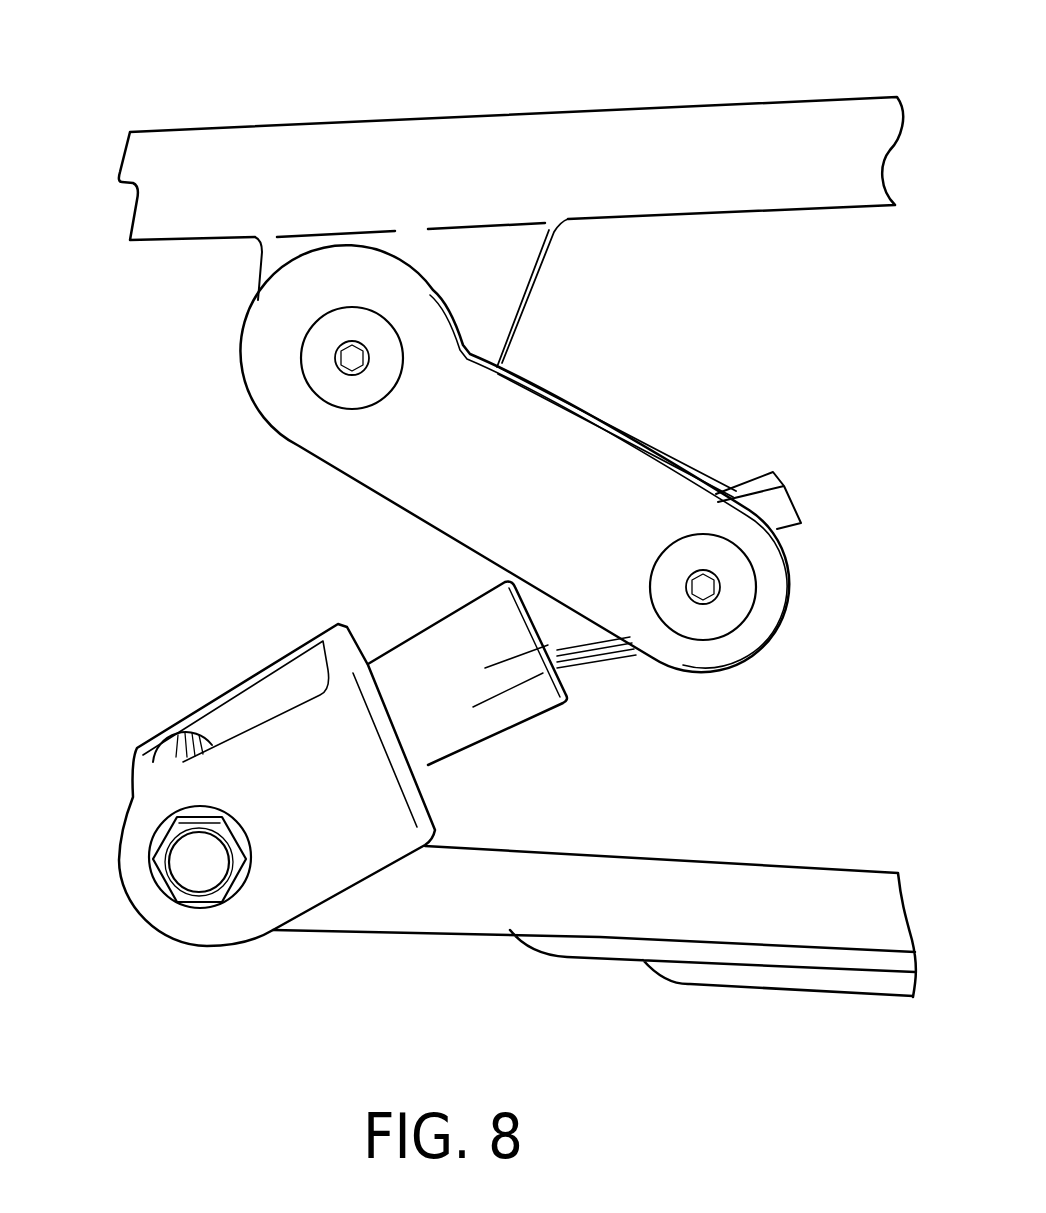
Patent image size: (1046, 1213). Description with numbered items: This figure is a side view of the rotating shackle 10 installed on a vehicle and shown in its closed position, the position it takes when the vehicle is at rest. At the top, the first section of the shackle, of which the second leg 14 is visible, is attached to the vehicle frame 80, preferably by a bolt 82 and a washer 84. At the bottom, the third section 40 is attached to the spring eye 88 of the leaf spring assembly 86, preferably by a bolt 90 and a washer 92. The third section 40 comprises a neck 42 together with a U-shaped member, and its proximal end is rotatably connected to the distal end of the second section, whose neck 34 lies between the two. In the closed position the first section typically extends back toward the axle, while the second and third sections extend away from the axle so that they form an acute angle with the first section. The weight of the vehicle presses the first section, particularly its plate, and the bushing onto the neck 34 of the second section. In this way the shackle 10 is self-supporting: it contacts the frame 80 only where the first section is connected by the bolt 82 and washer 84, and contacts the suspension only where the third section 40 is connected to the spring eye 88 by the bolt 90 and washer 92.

The rotating shackle 10 is at (432, 613).
The second leg 14 is at (487, 458).
The neck 34 is at (607, 655).
The third section 40 is at (285, 815).
The neck 42 is at (505, 682).
The frame 80 is at (330, 135).
The bolt 82 is at (343, 363).
The washer 84 is at (317, 362).
The leaf spring assembly 86 is at (412, 910).
The spring eye 88 is at (152, 766).
The bolt 90 is at (193, 867).
The washer 92 is at (243, 883).